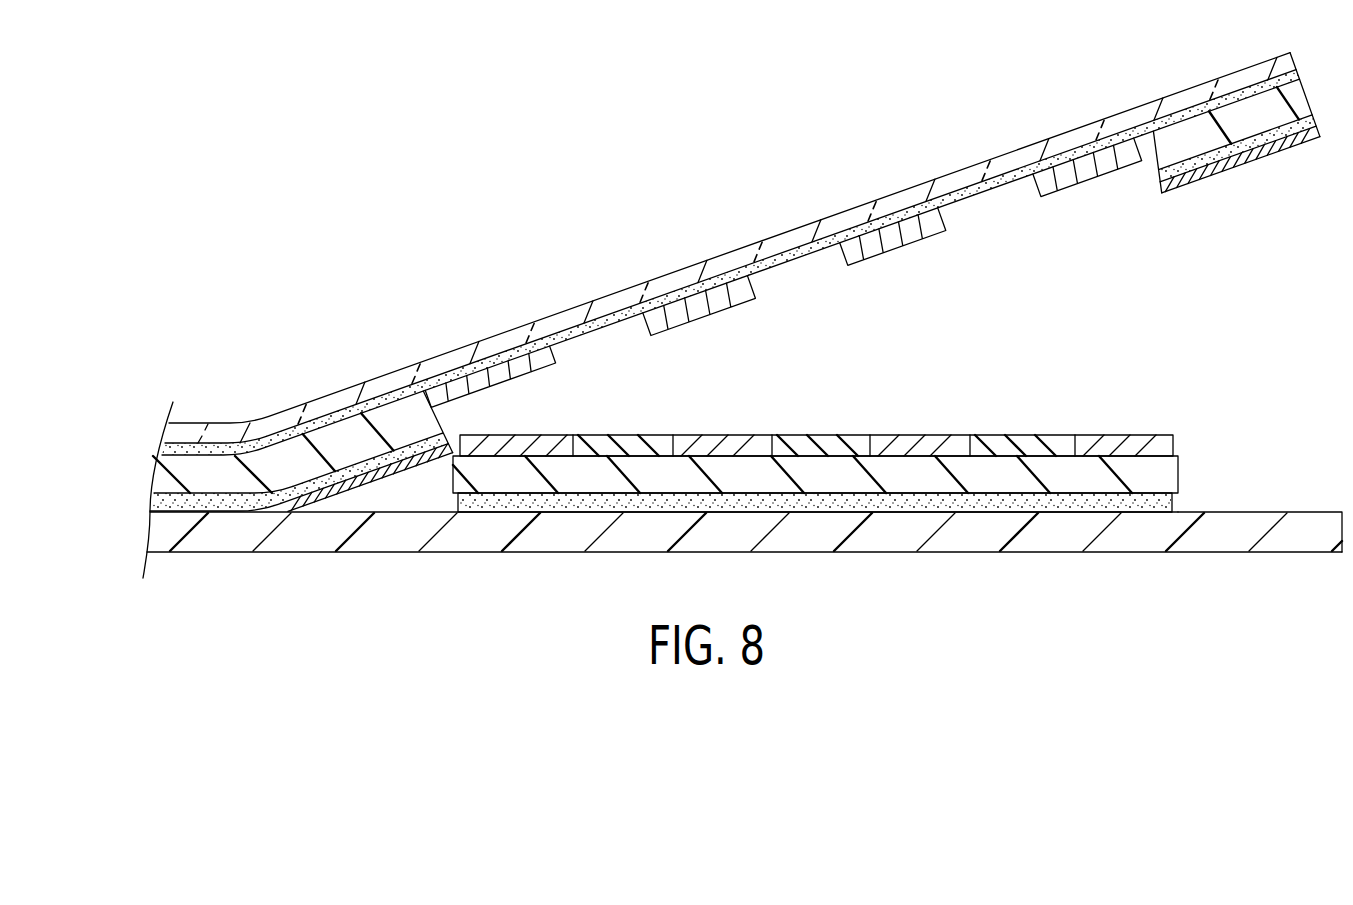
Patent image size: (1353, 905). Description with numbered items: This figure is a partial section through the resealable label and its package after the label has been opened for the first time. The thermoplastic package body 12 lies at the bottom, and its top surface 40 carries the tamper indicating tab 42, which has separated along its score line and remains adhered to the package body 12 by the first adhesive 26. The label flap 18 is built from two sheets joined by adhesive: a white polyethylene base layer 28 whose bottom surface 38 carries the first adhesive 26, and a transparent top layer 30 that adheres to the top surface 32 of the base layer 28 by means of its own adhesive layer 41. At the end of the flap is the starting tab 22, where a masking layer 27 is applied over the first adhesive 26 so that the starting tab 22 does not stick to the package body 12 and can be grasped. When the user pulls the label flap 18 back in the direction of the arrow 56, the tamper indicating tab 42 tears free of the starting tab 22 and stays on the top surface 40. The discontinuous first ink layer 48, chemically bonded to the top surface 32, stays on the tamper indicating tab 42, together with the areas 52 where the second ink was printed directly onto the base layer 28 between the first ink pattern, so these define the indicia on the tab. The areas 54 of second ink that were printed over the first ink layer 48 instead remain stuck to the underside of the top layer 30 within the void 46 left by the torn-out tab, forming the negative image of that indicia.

The package body 12 is at (1030, 540).
The label flap 18 is at (565, 183).
The starting tab 22 is at (777, 228).
The first adhesive 26 is at (452, 433).
The masking layer 27 is at (387, 472).
The base layer 28 is at (160, 478).
The top layer 30 is at (222, 433).
The top surface 32 is at (277, 430).
The bottom surface 38 is at (237, 495).
The top surface 40 is at (1297, 512).
The adhesive layer 41 is at (563, 335).
The tamper indicating tab 42 is at (1040, 383).
The void 46 is at (1007, 233).
The first ink layer 48 is at (543, 438).
The areas 52 is at (635, 445).
The areas 54 is at (550, 360).
The arrow 56 is at (1205, 4).